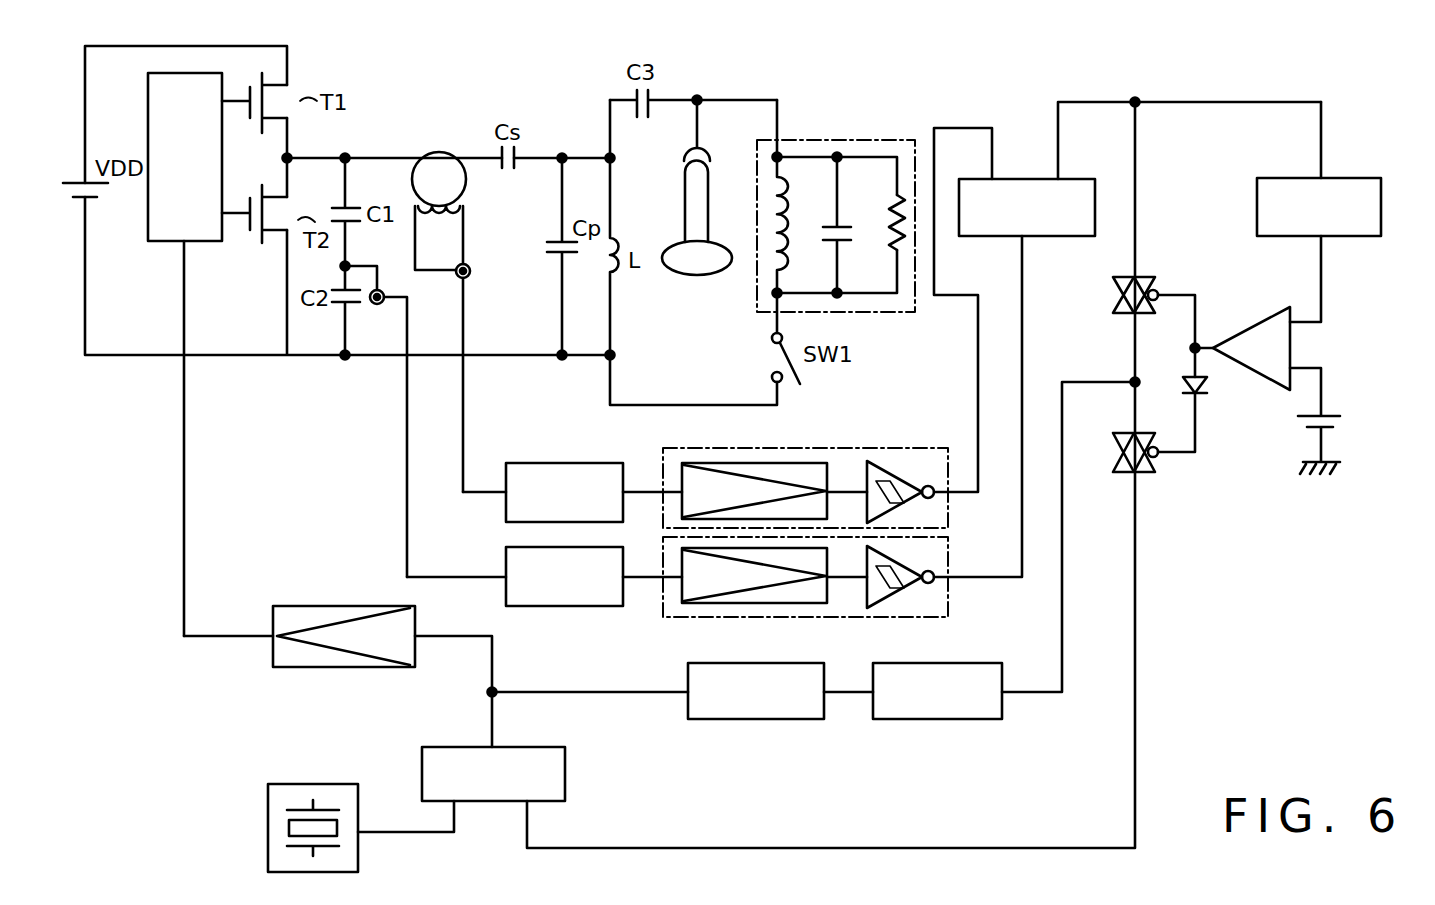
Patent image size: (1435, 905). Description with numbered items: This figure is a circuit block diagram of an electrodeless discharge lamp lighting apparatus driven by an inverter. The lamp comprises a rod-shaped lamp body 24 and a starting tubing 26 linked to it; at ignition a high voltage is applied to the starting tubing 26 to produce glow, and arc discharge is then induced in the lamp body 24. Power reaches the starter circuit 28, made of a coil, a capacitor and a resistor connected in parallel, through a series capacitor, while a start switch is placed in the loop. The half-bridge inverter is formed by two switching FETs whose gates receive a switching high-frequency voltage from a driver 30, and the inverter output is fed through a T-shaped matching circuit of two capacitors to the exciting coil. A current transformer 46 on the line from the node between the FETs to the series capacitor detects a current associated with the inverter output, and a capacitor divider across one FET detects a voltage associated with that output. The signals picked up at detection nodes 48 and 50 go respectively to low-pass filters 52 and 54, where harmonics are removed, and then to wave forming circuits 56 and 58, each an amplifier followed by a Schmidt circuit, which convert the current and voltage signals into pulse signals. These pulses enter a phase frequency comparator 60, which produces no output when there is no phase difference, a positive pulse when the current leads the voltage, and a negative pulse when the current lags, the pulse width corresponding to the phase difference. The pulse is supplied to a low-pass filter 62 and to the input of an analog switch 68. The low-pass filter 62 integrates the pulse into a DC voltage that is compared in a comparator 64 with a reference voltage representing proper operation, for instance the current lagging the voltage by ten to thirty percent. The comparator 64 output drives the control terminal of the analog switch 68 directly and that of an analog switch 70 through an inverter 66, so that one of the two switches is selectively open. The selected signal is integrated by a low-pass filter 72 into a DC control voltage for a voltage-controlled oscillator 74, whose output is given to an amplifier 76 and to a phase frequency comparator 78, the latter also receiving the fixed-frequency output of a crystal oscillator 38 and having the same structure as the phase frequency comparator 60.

The lamp body 24 is at (715, 275).
The starting tubing 26 is at (683, 190).
The starter circuit 28 is at (822, 139).
The driver 30 is at (212, 241).
The crystal oscillator 38 is at (343, 783).
The current transformer 46 is at (440, 152).
The detection node 48 is at (471, 268).
The detection node 50 is at (386, 295).
The low-pass filter 52 is at (533, 462).
The low-pass filter 54 is at (608, 606).
The wave forming circuit 56 is at (842, 448).
The wave forming circuit 58 is at (878, 618).
The phase frequency comparator 60 is at (1025, 178).
The low-pass filter 62 is at (1383, 212).
The comparator 64 is at (1249, 326).
The inverter 66 is at (1206, 390).
The analog switch 68 is at (1150, 284).
The analog switch 70 is at (1148, 473).
The low-pass filter 72 is at (970, 720).
The voltage-controlled oscillator 74 is at (800, 720).
The amplifier 76 is at (352, 605).
The phase frequency comparator 78 is at (567, 777).